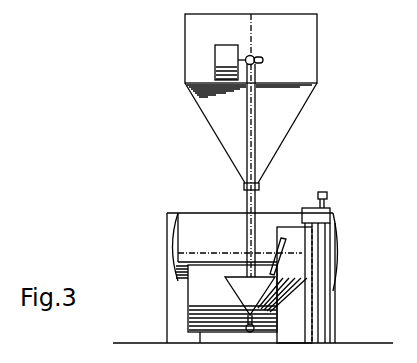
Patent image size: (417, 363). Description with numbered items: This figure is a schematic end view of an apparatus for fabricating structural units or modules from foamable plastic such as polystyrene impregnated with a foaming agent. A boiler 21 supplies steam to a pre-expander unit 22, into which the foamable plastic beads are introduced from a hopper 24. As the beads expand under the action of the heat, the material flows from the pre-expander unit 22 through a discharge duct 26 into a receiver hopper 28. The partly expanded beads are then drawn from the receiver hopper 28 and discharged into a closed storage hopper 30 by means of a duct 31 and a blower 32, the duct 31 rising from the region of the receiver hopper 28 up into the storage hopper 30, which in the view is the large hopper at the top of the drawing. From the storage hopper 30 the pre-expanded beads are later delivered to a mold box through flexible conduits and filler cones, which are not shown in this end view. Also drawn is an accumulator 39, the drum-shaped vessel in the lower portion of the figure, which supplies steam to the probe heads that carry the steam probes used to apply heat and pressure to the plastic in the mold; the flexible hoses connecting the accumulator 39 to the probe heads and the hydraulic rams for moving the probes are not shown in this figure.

The boiler 21 is at (190, 298).
The pre-expander unit 22 is at (320, 246).
The hopper 24 is at (328, 210).
The discharge duct 26 is at (278, 261).
The receiver hopper 28 is at (238, 296).
The closed storage hopper 30 is at (317, 62).
The duct 31 is at (256, 199).
The blower 32 is at (256, 60).
The accumulator 39 is at (190, 218).